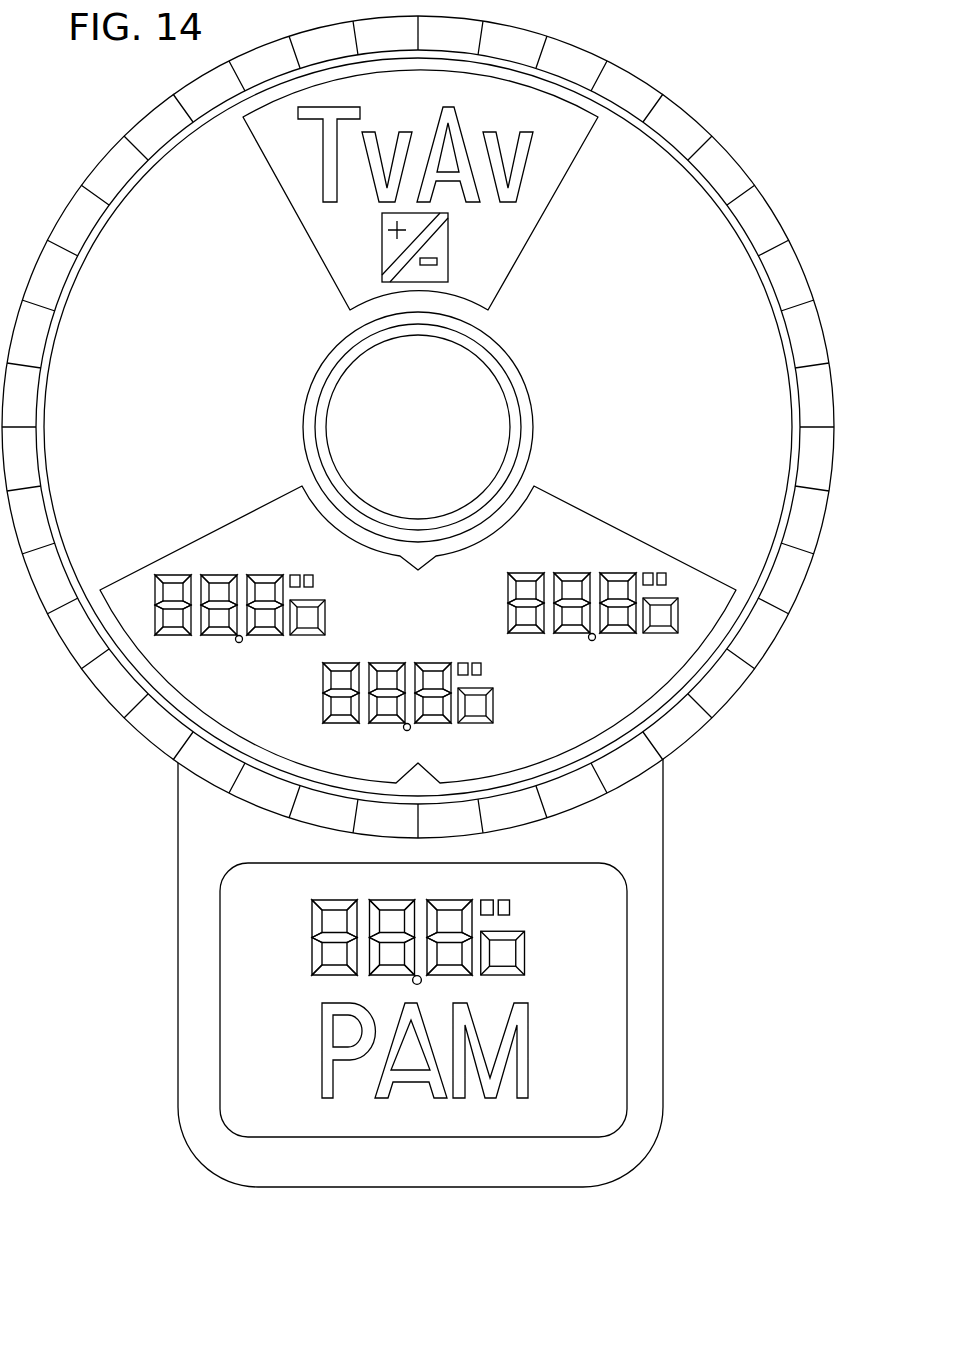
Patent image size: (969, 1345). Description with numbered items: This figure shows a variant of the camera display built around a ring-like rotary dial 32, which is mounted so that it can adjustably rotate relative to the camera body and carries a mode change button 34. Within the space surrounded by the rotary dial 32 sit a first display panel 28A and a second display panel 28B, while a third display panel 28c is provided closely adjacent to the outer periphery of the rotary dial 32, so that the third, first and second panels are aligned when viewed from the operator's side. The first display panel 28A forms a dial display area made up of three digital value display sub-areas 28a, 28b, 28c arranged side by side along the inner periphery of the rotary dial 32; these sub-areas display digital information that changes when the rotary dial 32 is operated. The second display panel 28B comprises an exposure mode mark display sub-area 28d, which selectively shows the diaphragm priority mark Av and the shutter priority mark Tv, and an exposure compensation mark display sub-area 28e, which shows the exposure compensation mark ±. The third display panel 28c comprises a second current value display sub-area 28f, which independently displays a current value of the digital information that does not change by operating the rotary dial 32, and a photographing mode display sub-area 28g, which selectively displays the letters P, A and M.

The rotary dial 32 is at (800, 520).
The mode change button 34 is at (473, 442).
The first display panel 28A is at (192, 532).
The second display panel 28B is at (548, 243).
The digital value display sub-area 28a is at (407, 656).
The digital value display sub-area 28b is at (218, 642).
The digital value display sub-area / third display panel 28c is at (615, 643).
The exposure mode mark display sub-area 28d is at (292, 190).
The exposure compensation mark display sub-area 28e is at (377, 253).
The second current value display sub-area 28f is at (545, 940).
The photographing mode display sub-area 28g is at (303, 1057).